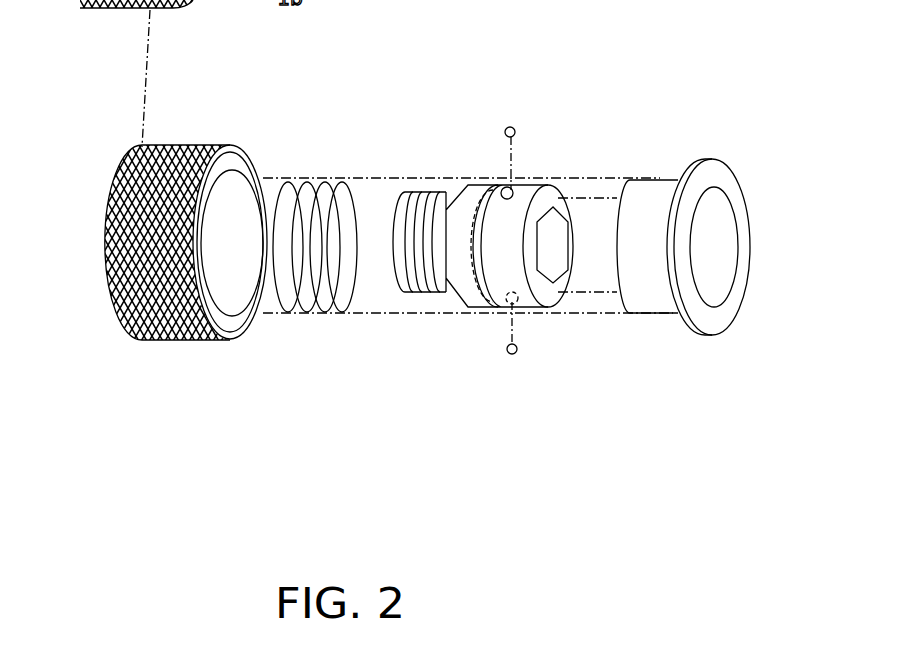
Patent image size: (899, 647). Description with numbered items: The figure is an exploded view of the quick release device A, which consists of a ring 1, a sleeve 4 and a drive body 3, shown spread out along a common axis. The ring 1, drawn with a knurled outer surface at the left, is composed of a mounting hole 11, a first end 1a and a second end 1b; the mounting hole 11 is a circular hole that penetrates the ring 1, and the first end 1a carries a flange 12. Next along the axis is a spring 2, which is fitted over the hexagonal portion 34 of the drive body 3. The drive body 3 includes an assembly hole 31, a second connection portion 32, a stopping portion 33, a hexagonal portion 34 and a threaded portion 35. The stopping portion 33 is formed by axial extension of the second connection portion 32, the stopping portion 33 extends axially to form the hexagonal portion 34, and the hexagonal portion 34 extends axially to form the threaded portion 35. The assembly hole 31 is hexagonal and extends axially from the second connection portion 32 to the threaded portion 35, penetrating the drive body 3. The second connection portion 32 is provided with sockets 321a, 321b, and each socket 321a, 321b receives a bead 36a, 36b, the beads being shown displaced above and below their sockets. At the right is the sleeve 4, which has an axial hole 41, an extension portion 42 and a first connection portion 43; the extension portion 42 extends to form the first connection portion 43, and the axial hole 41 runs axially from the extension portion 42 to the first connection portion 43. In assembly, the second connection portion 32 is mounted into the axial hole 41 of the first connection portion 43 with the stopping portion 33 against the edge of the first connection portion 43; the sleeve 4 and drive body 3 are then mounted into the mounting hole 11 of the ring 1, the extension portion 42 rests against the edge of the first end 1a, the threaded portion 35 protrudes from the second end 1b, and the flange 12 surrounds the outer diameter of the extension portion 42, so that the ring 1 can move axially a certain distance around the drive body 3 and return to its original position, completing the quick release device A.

The ring 1 is at (205, 270).
The first end 1a is at (238, 330).
The second end 1b is at (127, 333).
The mounting hole 11 is at (240, 180).
The flange 12 is at (243, 332).
The spring 2 is at (327, 182).
The drive body 3 is at (509, 267).
The assembly hole 31 is at (566, 226).
The second connection portion 32 is at (540, 183).
The socket 321a is at (517, 190).
The socket 321b is at (518, 300).
The stopping portion 33 is at (498, 315).
The hexagonal portion 34 is at (473, 197).
The threaded portion 35 is at (422, 197).
The bead 36a is at (513, 125).
The bead 36b is at (516, 354).
The sleeve 4 is at (712, 201).
The axial hole 41 is at (729, 235).
The extension portion 42 is at (733, 172).
The first connection portion 43 is at (668, 185).
The quick release device A is at (682, 80).